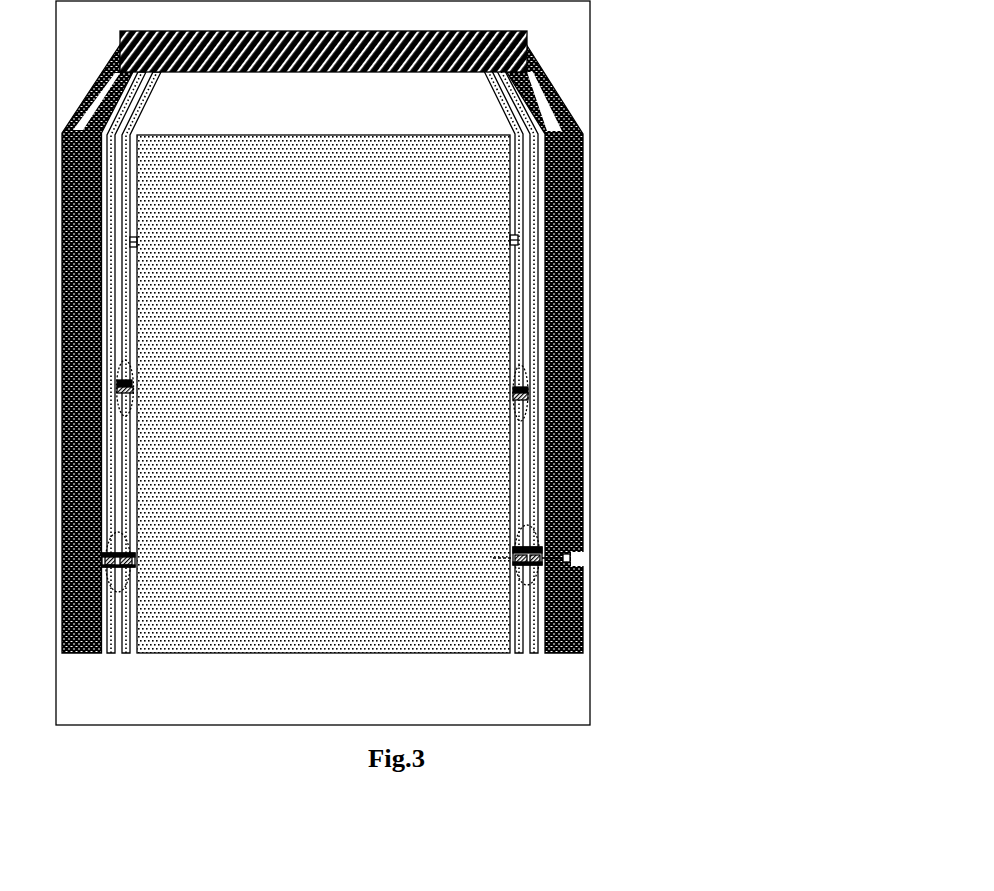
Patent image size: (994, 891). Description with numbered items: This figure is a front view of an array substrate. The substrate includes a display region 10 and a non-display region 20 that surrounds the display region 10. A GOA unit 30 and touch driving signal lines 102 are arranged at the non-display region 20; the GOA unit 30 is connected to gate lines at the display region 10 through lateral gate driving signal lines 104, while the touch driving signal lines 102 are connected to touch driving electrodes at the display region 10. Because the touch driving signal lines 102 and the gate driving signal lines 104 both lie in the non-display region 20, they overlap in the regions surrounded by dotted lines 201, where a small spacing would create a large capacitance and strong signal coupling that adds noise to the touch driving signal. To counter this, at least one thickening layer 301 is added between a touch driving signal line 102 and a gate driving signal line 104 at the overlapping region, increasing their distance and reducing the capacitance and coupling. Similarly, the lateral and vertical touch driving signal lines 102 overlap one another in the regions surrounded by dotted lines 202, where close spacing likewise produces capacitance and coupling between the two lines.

The display region 10 is at (465, 316).
The non-display region 20 is at (562, 43).
The GOA unit 30 is at (580, 268).
The touch driving signal lines 102 is at (518, 238).
The gate driving signal lines 104 is at (570, 573).
The dotted lines 201 is at (540, 545).
The dotted lines 202 is at (528, 380).
The thickening layer 301 is at (527, 405).